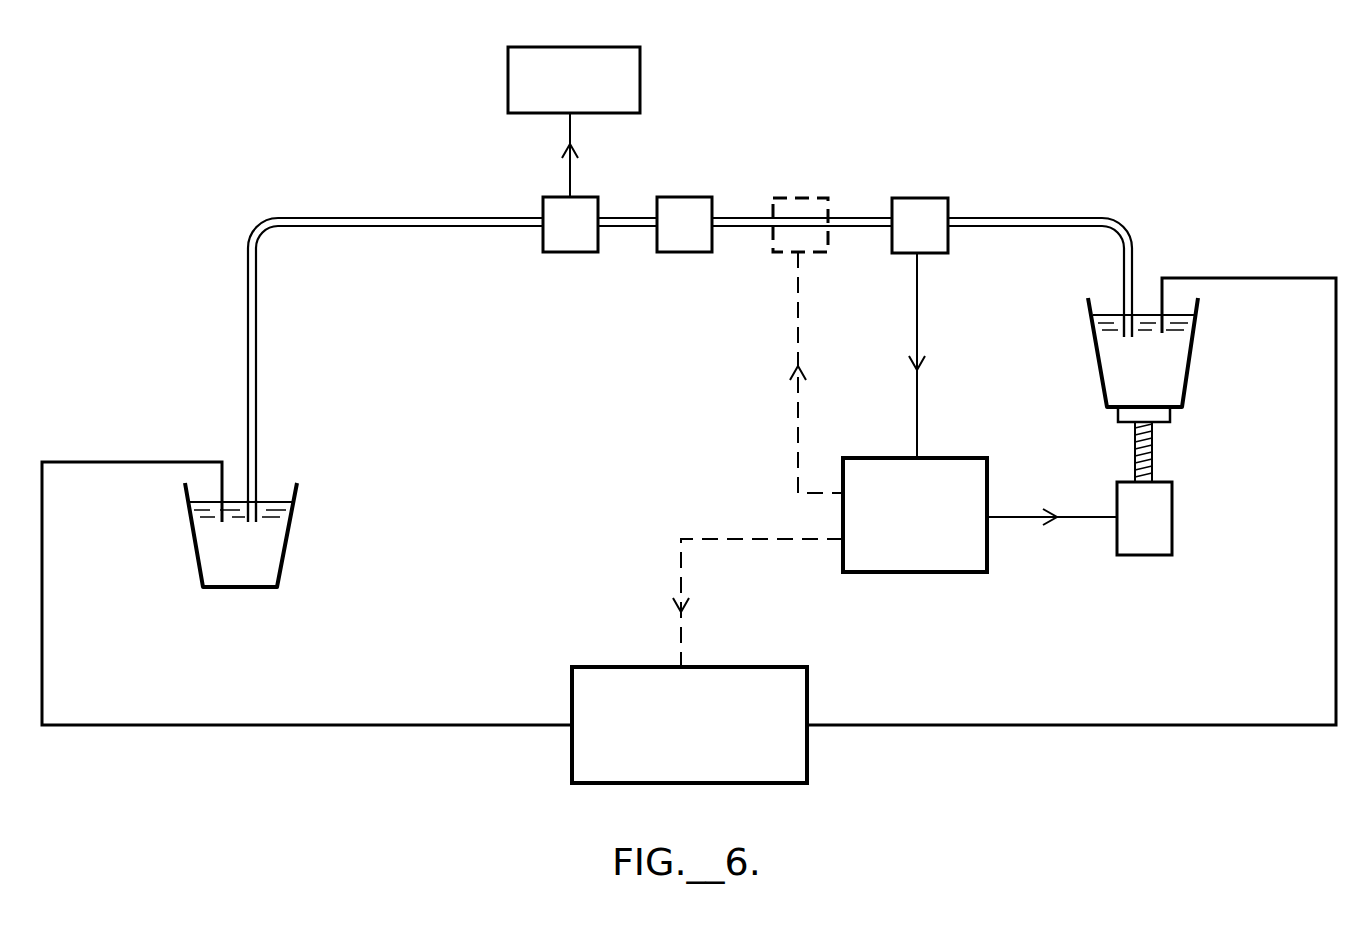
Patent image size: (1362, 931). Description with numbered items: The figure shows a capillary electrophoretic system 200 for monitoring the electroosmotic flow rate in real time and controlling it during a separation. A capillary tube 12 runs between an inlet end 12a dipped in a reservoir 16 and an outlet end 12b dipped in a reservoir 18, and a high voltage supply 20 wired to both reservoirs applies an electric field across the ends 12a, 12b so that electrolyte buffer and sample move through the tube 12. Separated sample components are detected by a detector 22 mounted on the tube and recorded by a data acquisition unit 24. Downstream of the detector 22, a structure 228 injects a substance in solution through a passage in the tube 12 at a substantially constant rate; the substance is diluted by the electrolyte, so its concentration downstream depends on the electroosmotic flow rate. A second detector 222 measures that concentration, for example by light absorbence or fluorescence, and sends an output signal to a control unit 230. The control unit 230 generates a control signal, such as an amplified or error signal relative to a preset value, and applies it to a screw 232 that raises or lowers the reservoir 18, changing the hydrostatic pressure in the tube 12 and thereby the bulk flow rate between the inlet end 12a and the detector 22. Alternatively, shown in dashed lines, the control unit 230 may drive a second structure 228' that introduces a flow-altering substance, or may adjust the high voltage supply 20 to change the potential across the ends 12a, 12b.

The apparatus 200 is at (1099, 86).
The capillary tube 12 is at (410, 218).
The inlet end 12a is at (257, 522).
The outlet end 12b is at (1122, 340).
The reservoir 16 is at (237, 587).
The reservoir 18 is at (1184, 385).
The high voltage supply 20 is at (635, 667).
The detector 22 is at (548, 197).
The data acquisition system 24 is at (612, 47).
The second detector 222 is at (922, 198).
The structure 228 is at (711, 186).
The second structure 228' is at (830, 307).
The control unit 230 is at (905, 572).
The screw 232 is at (1145, 555).